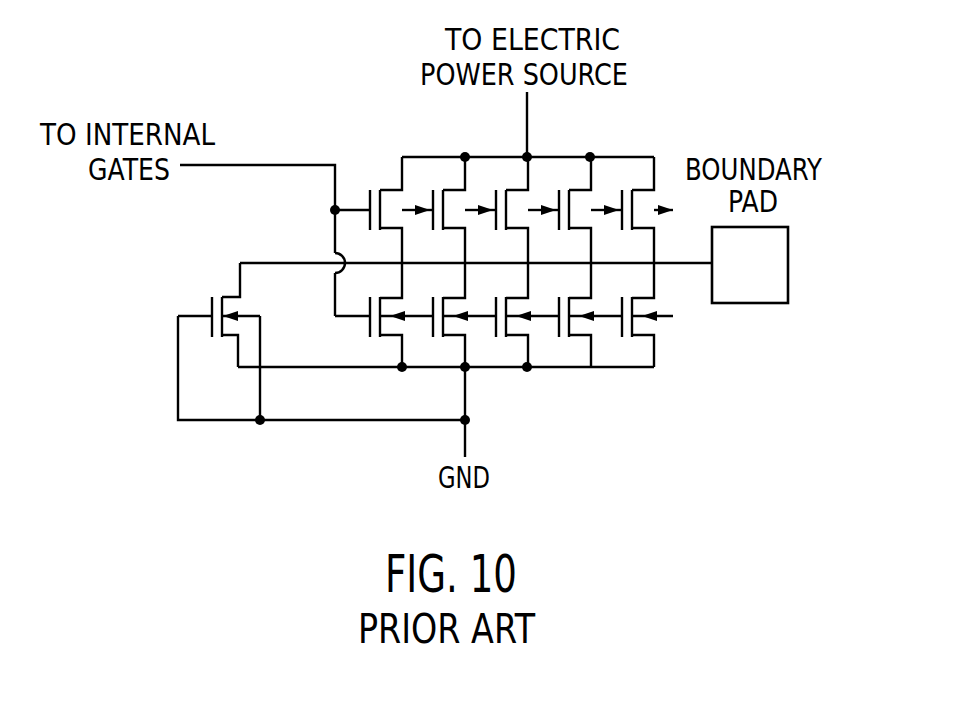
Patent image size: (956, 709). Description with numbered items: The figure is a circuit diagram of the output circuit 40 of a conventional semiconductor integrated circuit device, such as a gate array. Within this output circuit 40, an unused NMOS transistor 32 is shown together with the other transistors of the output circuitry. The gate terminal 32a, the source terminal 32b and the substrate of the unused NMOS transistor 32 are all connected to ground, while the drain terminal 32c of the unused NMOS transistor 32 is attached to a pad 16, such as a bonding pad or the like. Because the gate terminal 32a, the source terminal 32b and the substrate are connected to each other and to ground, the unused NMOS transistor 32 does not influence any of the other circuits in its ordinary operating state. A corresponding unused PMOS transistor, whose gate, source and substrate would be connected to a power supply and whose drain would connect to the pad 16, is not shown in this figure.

The output circuit 40 is at (692, 132).
The pad 16 is at (752, 285).
The unused NMOS transistor 32 is at (228, 292).
The gate terminal 32a is at (193, 313).
The source terminal 32b is at (238, 352).
The drain terminal 32c is at (275, 262).